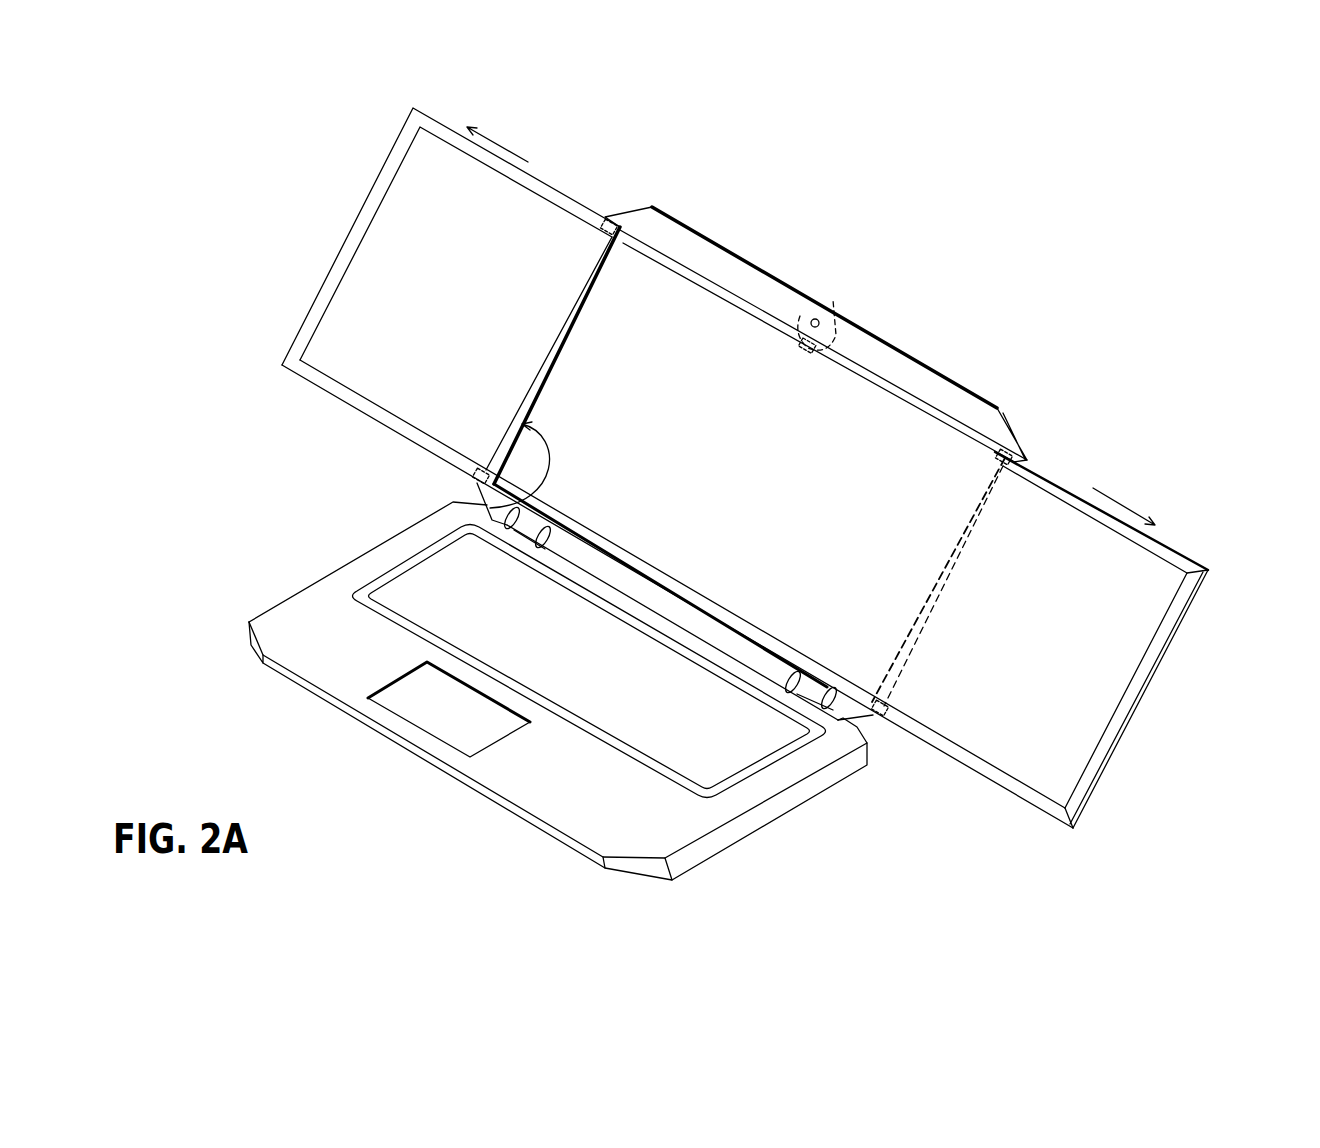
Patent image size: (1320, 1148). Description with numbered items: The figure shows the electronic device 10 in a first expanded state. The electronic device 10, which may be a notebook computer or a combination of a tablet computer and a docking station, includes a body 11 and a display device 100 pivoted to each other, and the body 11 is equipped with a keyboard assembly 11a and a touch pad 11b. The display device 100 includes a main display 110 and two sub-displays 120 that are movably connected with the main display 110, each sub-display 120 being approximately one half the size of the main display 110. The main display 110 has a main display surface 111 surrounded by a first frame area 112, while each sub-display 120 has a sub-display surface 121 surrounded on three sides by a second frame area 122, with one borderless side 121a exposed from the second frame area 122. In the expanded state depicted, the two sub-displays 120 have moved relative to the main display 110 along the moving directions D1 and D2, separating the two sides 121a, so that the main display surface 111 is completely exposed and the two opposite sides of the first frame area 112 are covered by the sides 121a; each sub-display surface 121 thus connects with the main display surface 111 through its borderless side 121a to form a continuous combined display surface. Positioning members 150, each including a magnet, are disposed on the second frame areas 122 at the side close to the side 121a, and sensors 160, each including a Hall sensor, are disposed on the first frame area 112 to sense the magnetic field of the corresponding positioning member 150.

The electronic device 10 is at (1193, 880).
The display device 100 is at (1064, 348).
The body 11 is at (286, 622).
The keyboard assembly 11a is at (390, 594).
The touch pad 11b is at (420, 712).
The main display 110 is at (640, 222).
The main display surface 111 is at (723, 323).
The first frame area 112 is at (665, 257).
The sub-display 120 is at (340, 258).
The sub-display surface 121 is at (353, 368).
The second frame area 122 is at (315, 316).
The side of sub-display surface 121a is at (487, 505).
The positioning member 150 is at (600, 218).
The sensor 160 is at (833, 300).
The moving direction D1 is at (497, 135).
The moving direction D2 is at (1124, 497).